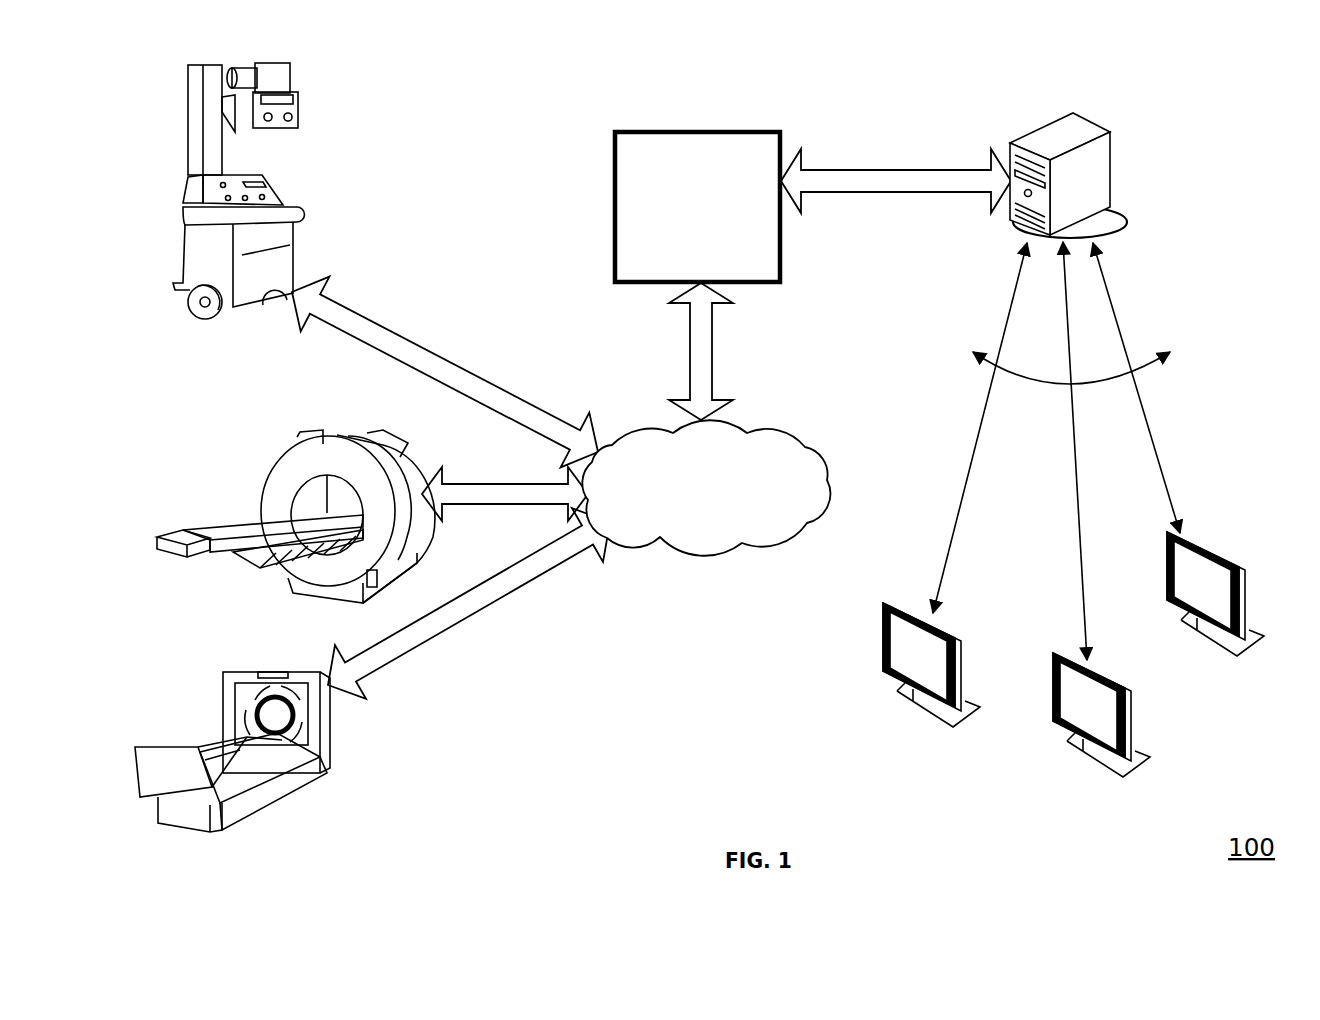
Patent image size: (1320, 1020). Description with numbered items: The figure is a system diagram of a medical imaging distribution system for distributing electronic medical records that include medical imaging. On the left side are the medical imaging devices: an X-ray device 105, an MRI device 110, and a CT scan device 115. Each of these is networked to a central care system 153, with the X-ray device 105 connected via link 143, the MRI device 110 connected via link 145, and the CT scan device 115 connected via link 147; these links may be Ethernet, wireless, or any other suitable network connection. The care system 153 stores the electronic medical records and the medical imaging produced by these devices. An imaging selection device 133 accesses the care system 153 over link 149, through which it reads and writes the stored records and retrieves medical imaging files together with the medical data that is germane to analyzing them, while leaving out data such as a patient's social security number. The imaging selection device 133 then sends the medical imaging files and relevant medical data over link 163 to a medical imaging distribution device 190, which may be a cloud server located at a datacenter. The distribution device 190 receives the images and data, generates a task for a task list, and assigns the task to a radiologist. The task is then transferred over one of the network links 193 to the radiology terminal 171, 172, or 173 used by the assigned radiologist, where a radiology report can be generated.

The X-ray device 105 is at (300, 232).
The MRI device 110 is at (290, 457).
The CT scan device 115 is at (330, 740).
The imaging selection device 133 is at (697, 207).
The link 143 is at (483, 375).
The link 145 is at (483, 482).
The link 147 is at (527, 588).
The link 149 is at (705, 338).
The care system 153 is at (706, 487).
The link 163 is at (883, 183).
The radiology terminal 171 is at (977, 762).
The radiology terminal 172 is at (1140, 810).
The radiology terminal 173 is at (1258, 643).
The medical imaging distribution device 190 is at (1113, 150).
The network links 193 is at (1063, 451).